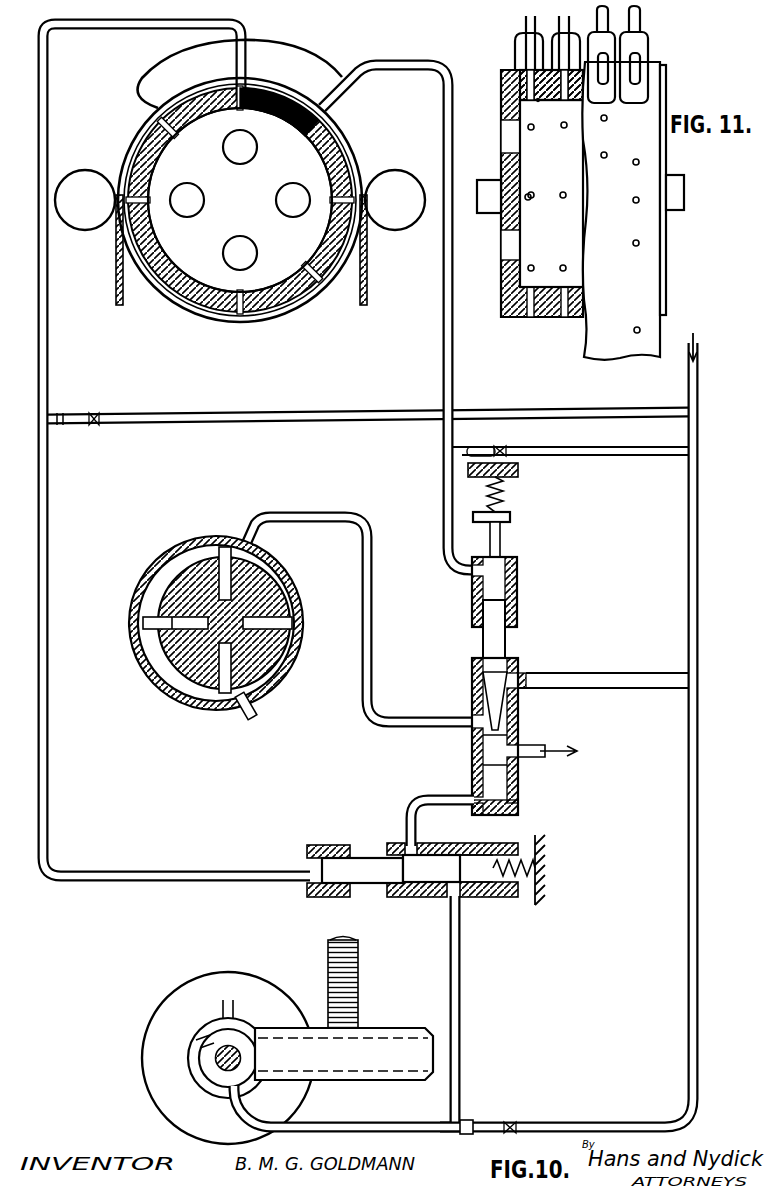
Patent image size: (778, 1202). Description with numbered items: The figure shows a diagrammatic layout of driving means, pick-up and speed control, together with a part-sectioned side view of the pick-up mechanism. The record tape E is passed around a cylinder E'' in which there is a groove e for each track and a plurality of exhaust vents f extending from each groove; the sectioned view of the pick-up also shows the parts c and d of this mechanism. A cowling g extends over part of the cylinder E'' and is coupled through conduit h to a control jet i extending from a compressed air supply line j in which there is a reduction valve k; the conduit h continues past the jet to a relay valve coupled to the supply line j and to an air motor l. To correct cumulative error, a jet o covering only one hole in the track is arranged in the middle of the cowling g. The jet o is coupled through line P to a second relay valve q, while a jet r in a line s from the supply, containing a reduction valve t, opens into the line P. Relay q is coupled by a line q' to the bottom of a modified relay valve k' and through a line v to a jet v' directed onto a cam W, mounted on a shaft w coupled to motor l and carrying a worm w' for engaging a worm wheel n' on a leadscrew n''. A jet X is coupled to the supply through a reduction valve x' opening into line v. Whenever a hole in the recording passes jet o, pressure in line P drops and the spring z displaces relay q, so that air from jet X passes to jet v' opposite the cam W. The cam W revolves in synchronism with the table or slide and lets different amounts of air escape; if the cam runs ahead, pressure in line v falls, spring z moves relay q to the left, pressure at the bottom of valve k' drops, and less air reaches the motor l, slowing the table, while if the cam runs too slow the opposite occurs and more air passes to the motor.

In FIG. 10, the jet o is at (247, 50).
In FIG. 10, the cowling g is at (307, 57).
In FIG. 10, the conduit h is at (393, 62).
In FIG. 10, the distributor casing c is at (350, 137).
In FIG. 10, the cylinder E'' is at (270, 200).
In FIG. 11, the cylinder E'' is at (524, 193).
In FIG. 10, the exhaust vents f is at (172, 277).
In FIG. 11, the exhaust vents f is at (530, 196).
In FIG. 10, the record tape E is at (259, 261).
In FIG. 11, the record tape E is at (530, 178).
In FIG. 11, the groove e is at (505, 78).
In FIG. 11, the hole d is at (537, 96).
In FIG. 10, the line s is at (275, 412).
In FIG. 10, the jet r is at (55, 426).
In FIG. 10, the reduction valve t is at (95, 426).
In FIG. 10, the line P is at (50, 500).
In FIG. 10, the air motor l is at (292, 663).
In FIG. 10, the reduction valve k is at (510, 440).
In FIG. 10, the control jet i is at (459, 464).
In FIG. 10, the compressed air supply line j is at (690, 383).
In FIG. 10, the modified relay valve k' is at (524, 668).
In FIG. 10, the line q' is at (420, 813).
In FIG. 10, the second relay valve q is at (412, 888).
In FIG. 10, the spring z is at (515, 878).
In FIG. 10, the worm w' is at (202, 986).
In FIG. 10, the cam W is at (233, 1040).
In FIG. 10, the shaft w is at (265, 1027).
In FIG. 10, the leadscrew n'' is at (361, 974).
In FIG. 10, the worm wheel n' is at (344, 1072).
In FIG. 10, the jet v' is at (228, 1134).
In FIG. 10, the line v is at (365, 1154).
In FIG. 10, the jet X is at (470, 1118).
In FIG. 10, the reduction valve x' is at (525, 1108).